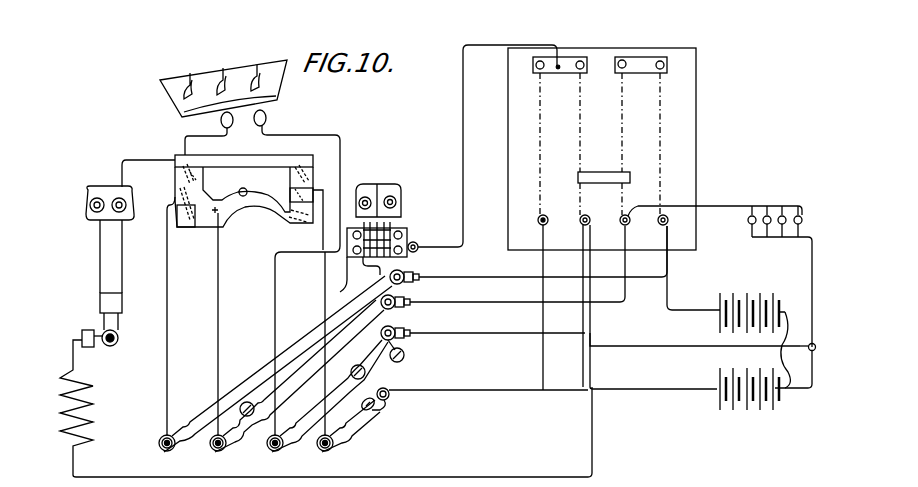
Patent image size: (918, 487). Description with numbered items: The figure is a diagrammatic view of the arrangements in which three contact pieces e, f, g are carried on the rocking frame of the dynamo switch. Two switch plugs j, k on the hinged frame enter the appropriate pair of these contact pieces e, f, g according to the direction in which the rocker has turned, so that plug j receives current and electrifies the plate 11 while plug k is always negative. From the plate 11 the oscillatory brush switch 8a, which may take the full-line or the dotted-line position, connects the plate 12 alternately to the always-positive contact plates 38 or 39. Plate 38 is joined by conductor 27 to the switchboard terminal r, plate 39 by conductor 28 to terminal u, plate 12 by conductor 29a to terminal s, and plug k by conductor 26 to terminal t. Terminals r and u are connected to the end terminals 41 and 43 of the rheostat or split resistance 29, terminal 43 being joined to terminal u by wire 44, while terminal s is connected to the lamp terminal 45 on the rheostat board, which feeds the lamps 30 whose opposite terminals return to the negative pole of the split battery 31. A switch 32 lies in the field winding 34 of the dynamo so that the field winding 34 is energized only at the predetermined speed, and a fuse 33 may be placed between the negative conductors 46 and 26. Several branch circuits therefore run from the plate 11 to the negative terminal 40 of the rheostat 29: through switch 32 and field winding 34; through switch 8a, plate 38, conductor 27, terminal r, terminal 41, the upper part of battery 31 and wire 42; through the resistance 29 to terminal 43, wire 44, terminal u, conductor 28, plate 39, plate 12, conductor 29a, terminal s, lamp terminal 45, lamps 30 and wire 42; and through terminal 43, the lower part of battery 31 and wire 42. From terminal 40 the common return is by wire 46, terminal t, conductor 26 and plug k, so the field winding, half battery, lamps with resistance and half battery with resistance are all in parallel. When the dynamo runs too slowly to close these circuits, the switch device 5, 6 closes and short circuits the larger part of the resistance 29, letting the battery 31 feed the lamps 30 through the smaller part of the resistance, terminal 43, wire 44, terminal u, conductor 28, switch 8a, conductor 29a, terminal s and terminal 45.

The contact piece e is at (190, 73).
The contact piece f is at (223, 68).
The contact piece g is at (257, 65).
The switch plug j is at (221, 118).
The switch plug k is at (254, 118).
The plate 11 is at (175, 157).
The brush switch 8a is at (182, 172).
The contact plate 38 is at (196, 176).
The contact plate 39 is at (293, 180).
The plate 12 is at (177, 222).
The switch 32 is at (100, 258).
The field winding 34 is at (326, 408).
The conductor 27 is at (167, 322).
The conductor 29a is at (218, 338).
The conductor 26 is at (274, 286).
The conductor 28 is at (325, 286).
The terminal r is at (413, 349).
The terminal s is at (417, 349).
The terminal t is at (338, 399).
The terminal u is at (430, 430).
The fuse 33 is at (397, 362).
The switch device 6 is at (395, 188).
The switch device 5 is at (404, 232).
The rheostat 29 is at (602, 149).
The rheostat end terminal 43 is at (538, 219).
The wire 44 is at (541, 355).
The negative terminal 40 is at (585, 215).
The lamp terminal 45 is at (629, 214).
The rheostat end terminal 41 is at (687, 262).
The wire 46 is at (502, 338).
The lamps 30 is at (748, 240).
The battery 31 is at (806, 375).
The wire 42 is at (724, 342).